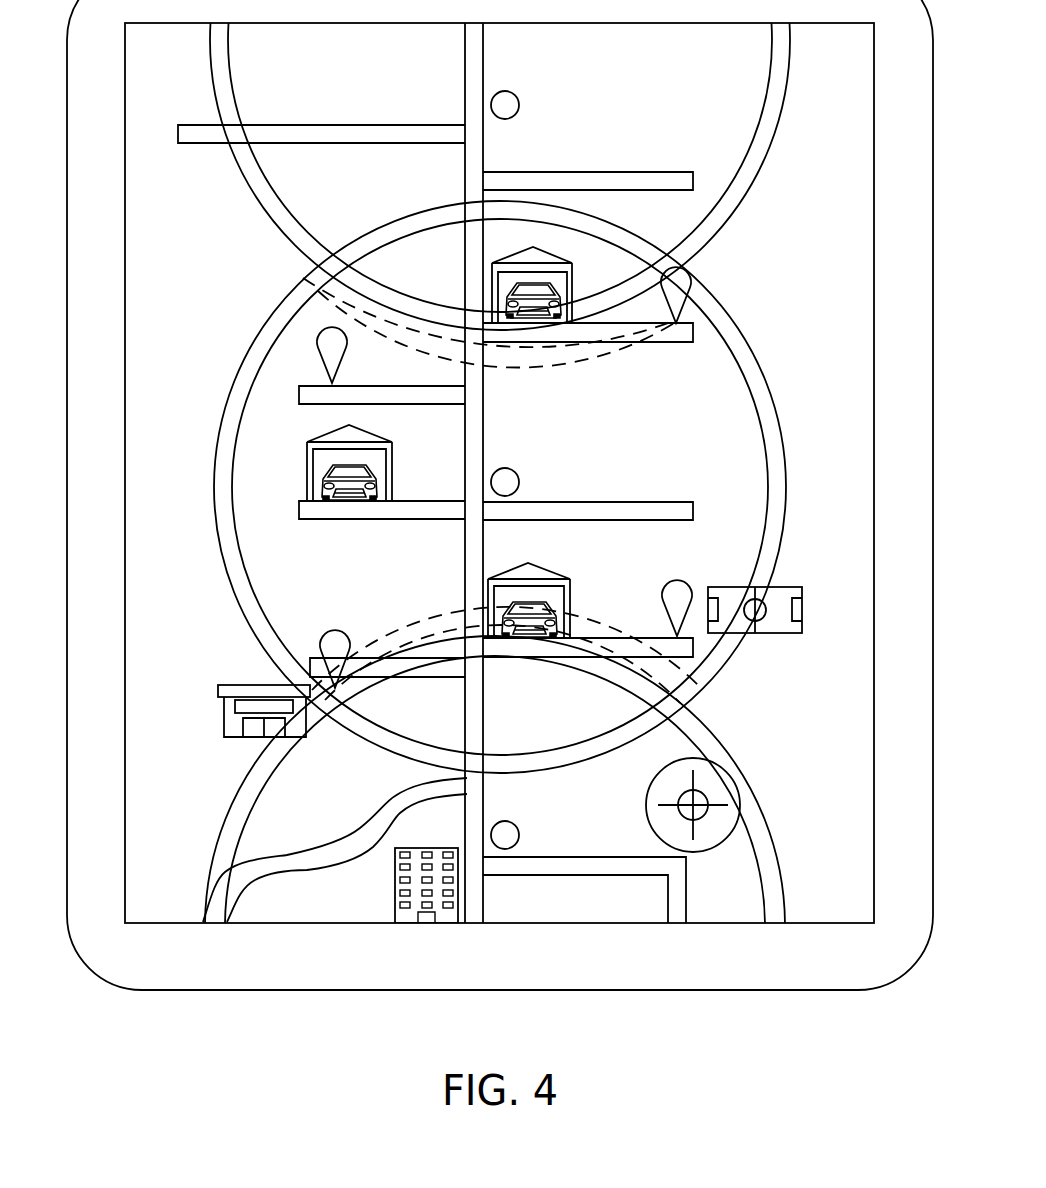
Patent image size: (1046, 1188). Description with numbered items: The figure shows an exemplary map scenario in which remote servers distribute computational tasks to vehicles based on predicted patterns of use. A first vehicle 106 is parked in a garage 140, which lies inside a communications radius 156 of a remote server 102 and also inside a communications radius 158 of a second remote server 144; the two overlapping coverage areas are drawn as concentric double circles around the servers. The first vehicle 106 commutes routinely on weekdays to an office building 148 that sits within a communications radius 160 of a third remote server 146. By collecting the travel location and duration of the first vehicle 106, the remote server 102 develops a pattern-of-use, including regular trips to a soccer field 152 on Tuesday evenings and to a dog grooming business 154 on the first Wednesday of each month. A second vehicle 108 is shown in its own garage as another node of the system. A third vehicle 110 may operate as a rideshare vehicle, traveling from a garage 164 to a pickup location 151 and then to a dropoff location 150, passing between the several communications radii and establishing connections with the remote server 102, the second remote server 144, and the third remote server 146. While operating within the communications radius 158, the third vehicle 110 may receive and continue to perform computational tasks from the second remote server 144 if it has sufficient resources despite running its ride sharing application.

The remote server 102 is at (519, 106).
The first vehicle 106 is at (492, 297).
The second vehicle 108 is at (392, 480).
The third vehicle 110 is at (550, 612).
The garage 140 is at (574, 275).
The second remote server 144 is at (519, 482).
The third remote server 146 is at (519, 836).
The office building 148 is at (395, 890).
The dropoff location 150 is at (691, 283).
The pickup location 151 is at (345, 352).
The soccer field 152 is at (672, 583).
The dog grooming business 154 is at (335, 630).
The communications radius 156 is at (766, 196).
The communications radius 158 is at (769, 385).
The communications radius 160 is at (759, 772).
The garage 164 is at (540, 571).